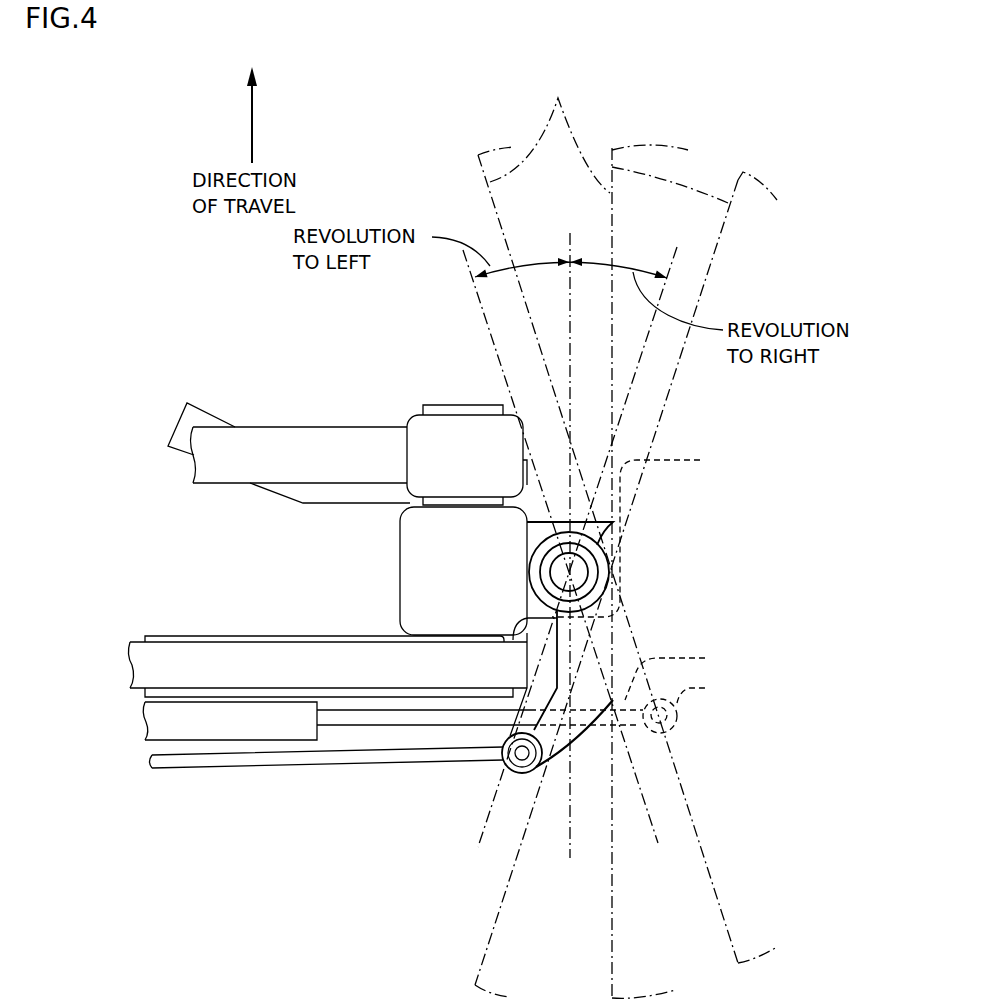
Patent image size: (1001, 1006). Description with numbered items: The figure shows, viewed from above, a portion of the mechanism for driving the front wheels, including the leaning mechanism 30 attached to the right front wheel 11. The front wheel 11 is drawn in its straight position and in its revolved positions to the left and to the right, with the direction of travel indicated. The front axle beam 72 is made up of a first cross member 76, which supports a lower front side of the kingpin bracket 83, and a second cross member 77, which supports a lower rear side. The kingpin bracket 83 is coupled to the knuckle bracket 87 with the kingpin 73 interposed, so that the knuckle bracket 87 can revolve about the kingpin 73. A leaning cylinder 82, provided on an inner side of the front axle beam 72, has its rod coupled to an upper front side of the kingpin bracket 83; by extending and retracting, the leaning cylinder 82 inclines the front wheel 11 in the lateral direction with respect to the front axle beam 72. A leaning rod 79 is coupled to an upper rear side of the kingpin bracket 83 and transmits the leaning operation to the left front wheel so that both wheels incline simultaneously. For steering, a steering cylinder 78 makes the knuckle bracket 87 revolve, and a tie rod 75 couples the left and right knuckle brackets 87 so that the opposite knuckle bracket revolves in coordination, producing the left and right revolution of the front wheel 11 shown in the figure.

The front wheel 11 is at (620, 535).
The leaning mechanism 30 is at (152, 203).
The front axle beam 72 is at (255, 338).
The kingpin 73 is at (580, 573).
The tie rod 75 is at (360, 757).
The first cross member 76 is at (208, 410).
The second cross member 77 is at (167, 633).
The steering cylinder 78 is at (278, 725).
The leaning rod 79 is at (140, 670).
The leaning cylinder 82 is at (387, 438).
The kingpin bracket 83 is at (410, 535).
The knuckle bracket 87 is at (537, 575).